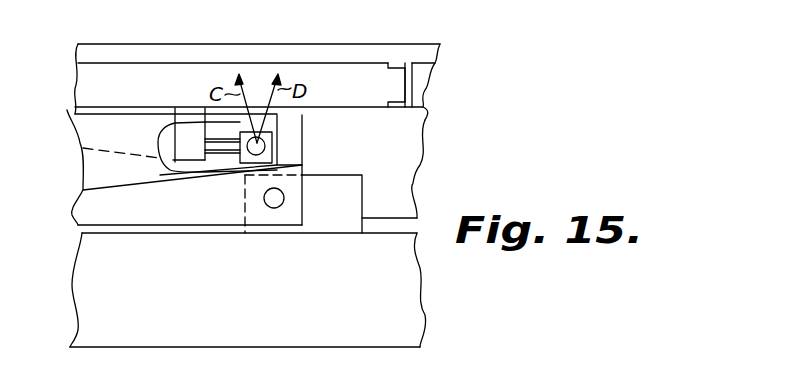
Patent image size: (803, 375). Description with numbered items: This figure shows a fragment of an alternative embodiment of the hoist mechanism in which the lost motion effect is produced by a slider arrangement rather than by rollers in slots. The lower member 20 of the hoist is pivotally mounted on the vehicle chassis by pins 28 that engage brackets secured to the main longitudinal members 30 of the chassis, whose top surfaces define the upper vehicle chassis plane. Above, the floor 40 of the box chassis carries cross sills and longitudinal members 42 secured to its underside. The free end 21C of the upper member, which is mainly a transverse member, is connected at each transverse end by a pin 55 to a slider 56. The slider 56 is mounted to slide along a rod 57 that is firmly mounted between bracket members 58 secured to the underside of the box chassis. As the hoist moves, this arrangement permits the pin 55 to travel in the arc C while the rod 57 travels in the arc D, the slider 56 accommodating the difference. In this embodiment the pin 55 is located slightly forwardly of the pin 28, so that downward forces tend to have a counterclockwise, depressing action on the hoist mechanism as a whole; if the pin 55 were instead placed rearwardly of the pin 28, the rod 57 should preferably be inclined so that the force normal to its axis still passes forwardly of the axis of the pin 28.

The lower member 20 is at (79, 206).
The free end 21C is at (150, 125).
The pins 28 is at (284, 198).
The main longitudinal members 30 is at (408, 280).
The floor 40 is at (368, 47).
The longitudinal members 42 is at (402, 148).
The pin 55 is at (257, 143).
The slider 56 is at (272, 148).
The rod 57 is at (223, 147).
The bracket members 58 is at (188, 110).